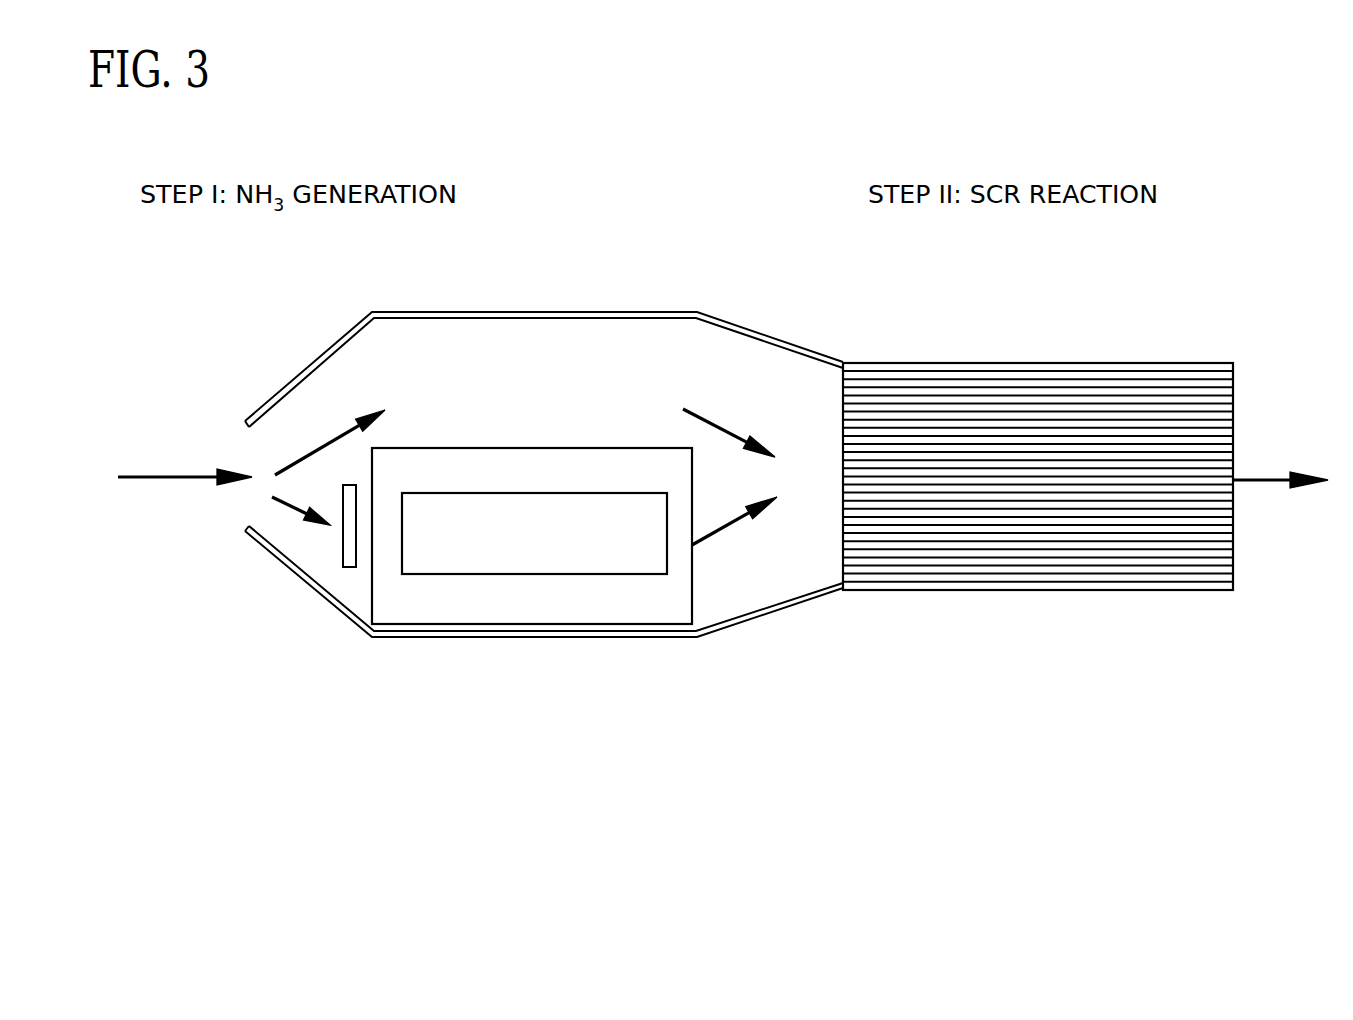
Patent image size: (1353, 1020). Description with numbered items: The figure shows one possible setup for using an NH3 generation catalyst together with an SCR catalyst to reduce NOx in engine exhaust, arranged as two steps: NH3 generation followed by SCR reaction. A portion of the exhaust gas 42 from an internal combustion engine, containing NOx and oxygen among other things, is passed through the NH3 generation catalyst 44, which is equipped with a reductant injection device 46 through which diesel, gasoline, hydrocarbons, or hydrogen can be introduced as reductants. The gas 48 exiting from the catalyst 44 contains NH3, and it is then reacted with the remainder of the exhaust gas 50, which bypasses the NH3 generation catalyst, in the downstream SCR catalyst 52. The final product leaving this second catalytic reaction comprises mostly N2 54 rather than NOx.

The exhaust gas 42 is at (162, 480).
The NH3 generation catalyst 44 is at (507, 604).
The reductant injection device 46 is at (343, 553).
The gas exiting from the catalyst 48 is at (720, 532).
The remainder of the exhaust gas 50 is at (710, 428).
The SCR catalyst 52 is at (1026, 560).
The N2 54 is at (1274, 483).